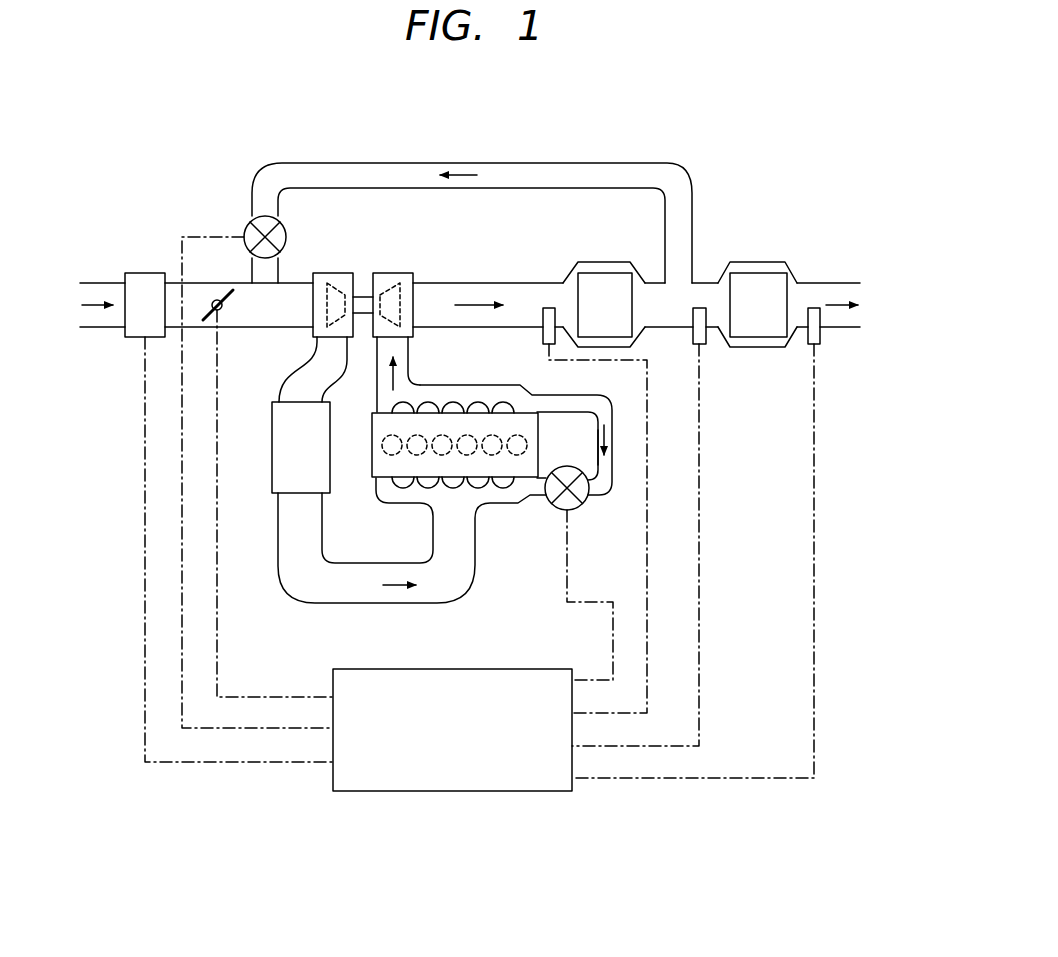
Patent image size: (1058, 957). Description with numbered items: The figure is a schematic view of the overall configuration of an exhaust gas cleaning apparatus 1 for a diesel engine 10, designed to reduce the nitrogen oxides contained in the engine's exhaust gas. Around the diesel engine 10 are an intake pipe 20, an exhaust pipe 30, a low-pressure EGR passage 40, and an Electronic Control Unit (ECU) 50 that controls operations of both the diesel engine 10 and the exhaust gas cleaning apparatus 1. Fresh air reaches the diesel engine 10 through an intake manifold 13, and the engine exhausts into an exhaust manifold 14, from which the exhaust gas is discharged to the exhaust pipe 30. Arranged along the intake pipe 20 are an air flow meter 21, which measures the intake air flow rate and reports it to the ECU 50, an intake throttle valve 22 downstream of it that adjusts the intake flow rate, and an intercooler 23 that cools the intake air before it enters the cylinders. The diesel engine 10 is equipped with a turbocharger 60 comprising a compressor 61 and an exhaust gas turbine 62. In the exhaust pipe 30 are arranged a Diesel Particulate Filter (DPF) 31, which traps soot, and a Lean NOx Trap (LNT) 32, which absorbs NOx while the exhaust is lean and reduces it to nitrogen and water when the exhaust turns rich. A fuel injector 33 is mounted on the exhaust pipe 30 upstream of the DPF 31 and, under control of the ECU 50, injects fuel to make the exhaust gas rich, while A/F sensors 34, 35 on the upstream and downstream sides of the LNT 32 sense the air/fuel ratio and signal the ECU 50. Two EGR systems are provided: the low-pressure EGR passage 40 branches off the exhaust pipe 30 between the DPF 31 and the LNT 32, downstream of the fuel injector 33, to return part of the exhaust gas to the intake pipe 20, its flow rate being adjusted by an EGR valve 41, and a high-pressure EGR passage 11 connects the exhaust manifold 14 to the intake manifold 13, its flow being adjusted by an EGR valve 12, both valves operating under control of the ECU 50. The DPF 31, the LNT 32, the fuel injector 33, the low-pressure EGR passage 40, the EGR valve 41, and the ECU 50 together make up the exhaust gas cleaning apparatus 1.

The exhaust gas cleaning apparatus 1 is at (680, 124).
The diesel engine 10 is at (370, 437).
The high-pressure EGR passage 11 is at (597, 447).
The EGR valve 12 is at (573, 510).
The intake manifold 13 is at (500, 504).
The exhaust manifold 14 is at (448, 385).
The intake pipe 20 is at (100, 282).
The air flow meter 21 is at (125, 336).
The intake throttle valve 22 is at (236, 311).
The intercooler 23 is at (271, 440).
The exhaust pipe 30 is at (830, 283).
The Diesel Particulate Filter (DPF) 31 is at (604, 272).
The Lean NOx Trap (LNT) 32 is at (765, 272).
The fuel injector 33 is at (543, 336).
The A/F sensor 34 is at (706, 346).
The A/F sensor 35 is at (820, 346).
The low-pressure EGR passage 40 is at (368, 163).
The EGR valve 41 is at (242, 226).
The Electronic Control Unit (ECU) 50 is at (368, 792).
The turbocharger 60 is at (363, 266).
The compressor 61 is at (338, 273).
The exhaust gas turbine 62 is at (391, 284).